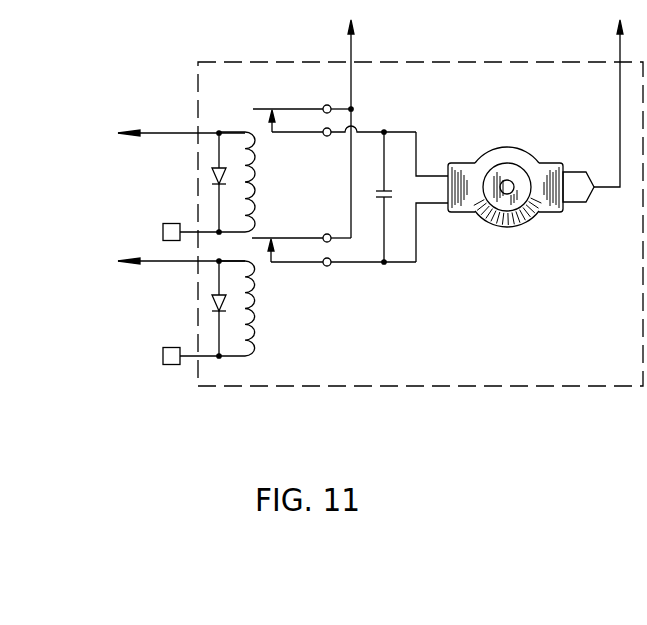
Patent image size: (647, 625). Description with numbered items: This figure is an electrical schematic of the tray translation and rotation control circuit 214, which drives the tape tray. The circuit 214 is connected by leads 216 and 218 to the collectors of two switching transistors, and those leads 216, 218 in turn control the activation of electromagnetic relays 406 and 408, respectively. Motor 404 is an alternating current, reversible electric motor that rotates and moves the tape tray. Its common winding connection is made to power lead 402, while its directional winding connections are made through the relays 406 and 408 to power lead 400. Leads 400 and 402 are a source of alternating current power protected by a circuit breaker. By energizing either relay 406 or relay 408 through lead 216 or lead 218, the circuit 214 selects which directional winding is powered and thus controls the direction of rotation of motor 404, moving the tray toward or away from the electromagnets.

The tray translation and rotation control circuit 214 is at (497, 387).
The lead 216 is at (171, 133).
The lead 218 is at (188, 263).
The power lead 400 is at (351, 52).
The power lead 402 is at (620, 48).
The motor 404 is at (493, 228).
The electromagnetic relay 406 is at (324, 170).
The electromagnetic relay 408 is at (245, 357).